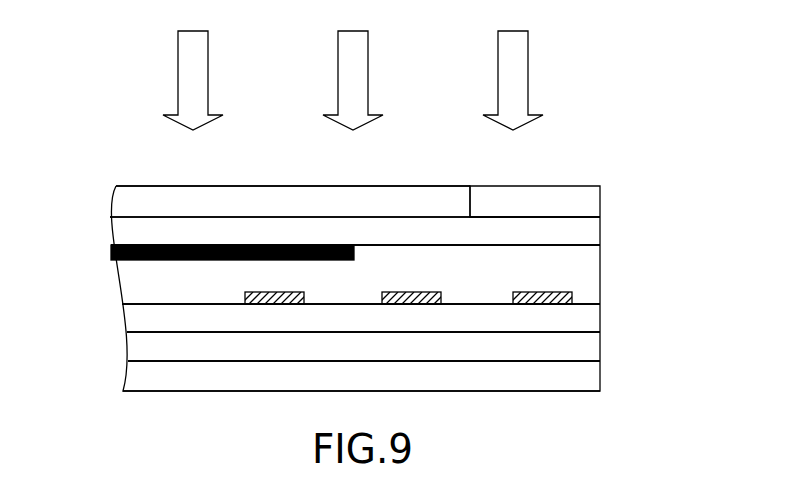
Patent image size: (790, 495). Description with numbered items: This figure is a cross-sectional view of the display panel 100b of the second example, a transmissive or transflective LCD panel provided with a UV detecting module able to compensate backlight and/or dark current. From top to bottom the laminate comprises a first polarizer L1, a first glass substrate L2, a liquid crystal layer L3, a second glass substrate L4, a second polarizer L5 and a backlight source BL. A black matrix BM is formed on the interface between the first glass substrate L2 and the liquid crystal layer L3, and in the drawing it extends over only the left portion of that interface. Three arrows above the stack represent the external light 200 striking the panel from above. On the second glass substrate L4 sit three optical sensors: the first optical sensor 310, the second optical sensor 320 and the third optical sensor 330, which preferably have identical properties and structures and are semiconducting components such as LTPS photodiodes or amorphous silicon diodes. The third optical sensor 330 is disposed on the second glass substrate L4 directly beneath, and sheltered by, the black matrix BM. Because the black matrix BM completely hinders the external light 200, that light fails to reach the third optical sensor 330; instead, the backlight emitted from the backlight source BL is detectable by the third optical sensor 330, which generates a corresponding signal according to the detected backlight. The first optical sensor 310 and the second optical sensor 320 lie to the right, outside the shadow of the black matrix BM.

The external light 200 is at (528, 70).
The display panel 100b is at (140, 186).
The first polarizer L1 is at (470, 203).
The first glass substrate L2 is at (600, 229).
The black matrix BM is at (345, 245).
The liquid crystal layer L3 is at (600, 275).
The third optical sensor 330 is at (275, 291).
The second optical sensor 320 is at (413, 291).
The first optical sensor 310 is at (526, 291).
The second glass substrate L4 is at (600, 317).
The second polarizer L5 is at (600, 345).
The backlight source BL is at (600, 375).